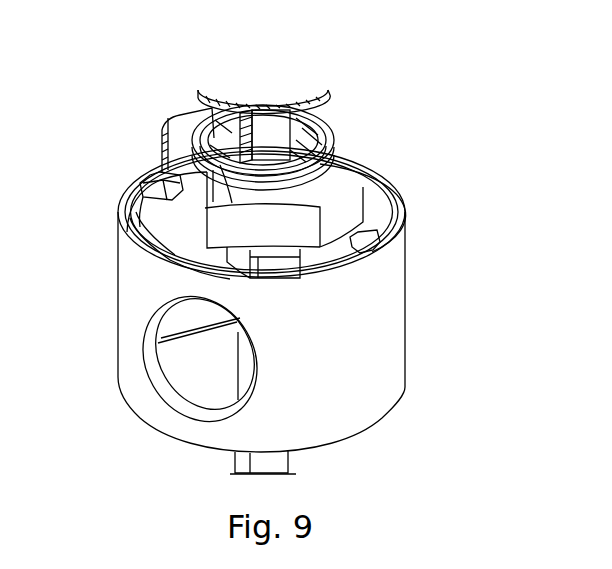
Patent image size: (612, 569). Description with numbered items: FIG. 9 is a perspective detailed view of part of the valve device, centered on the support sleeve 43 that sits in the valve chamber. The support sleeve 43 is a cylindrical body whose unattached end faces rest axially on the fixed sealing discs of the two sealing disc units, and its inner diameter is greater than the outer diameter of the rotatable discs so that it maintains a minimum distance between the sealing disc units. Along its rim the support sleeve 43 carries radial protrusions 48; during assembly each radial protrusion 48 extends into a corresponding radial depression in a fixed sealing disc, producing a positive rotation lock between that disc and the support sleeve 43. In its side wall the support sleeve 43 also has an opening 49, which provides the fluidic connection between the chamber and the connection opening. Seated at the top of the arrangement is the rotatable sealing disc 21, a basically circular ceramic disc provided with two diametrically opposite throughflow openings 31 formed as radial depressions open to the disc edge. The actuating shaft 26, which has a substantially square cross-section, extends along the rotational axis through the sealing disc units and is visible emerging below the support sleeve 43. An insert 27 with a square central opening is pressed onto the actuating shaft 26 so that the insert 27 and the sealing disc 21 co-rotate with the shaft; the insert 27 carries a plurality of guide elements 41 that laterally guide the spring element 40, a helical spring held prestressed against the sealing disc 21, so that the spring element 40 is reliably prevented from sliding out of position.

The rotatable sealing disc 21 is at (390, 174).
The actuating shaft 26 is at (278, 464).
The insert 27 is at (290, 283).
The throughflow opening 31 is at (188, 205).
The spring element 40 is at (286, 93).
The guide element 41 is at (236, 111).
The support sleeve 43 is at (392, 318).
The radial protrusion 48 is at (150, 172).
The opening 49 is at (156, 372).